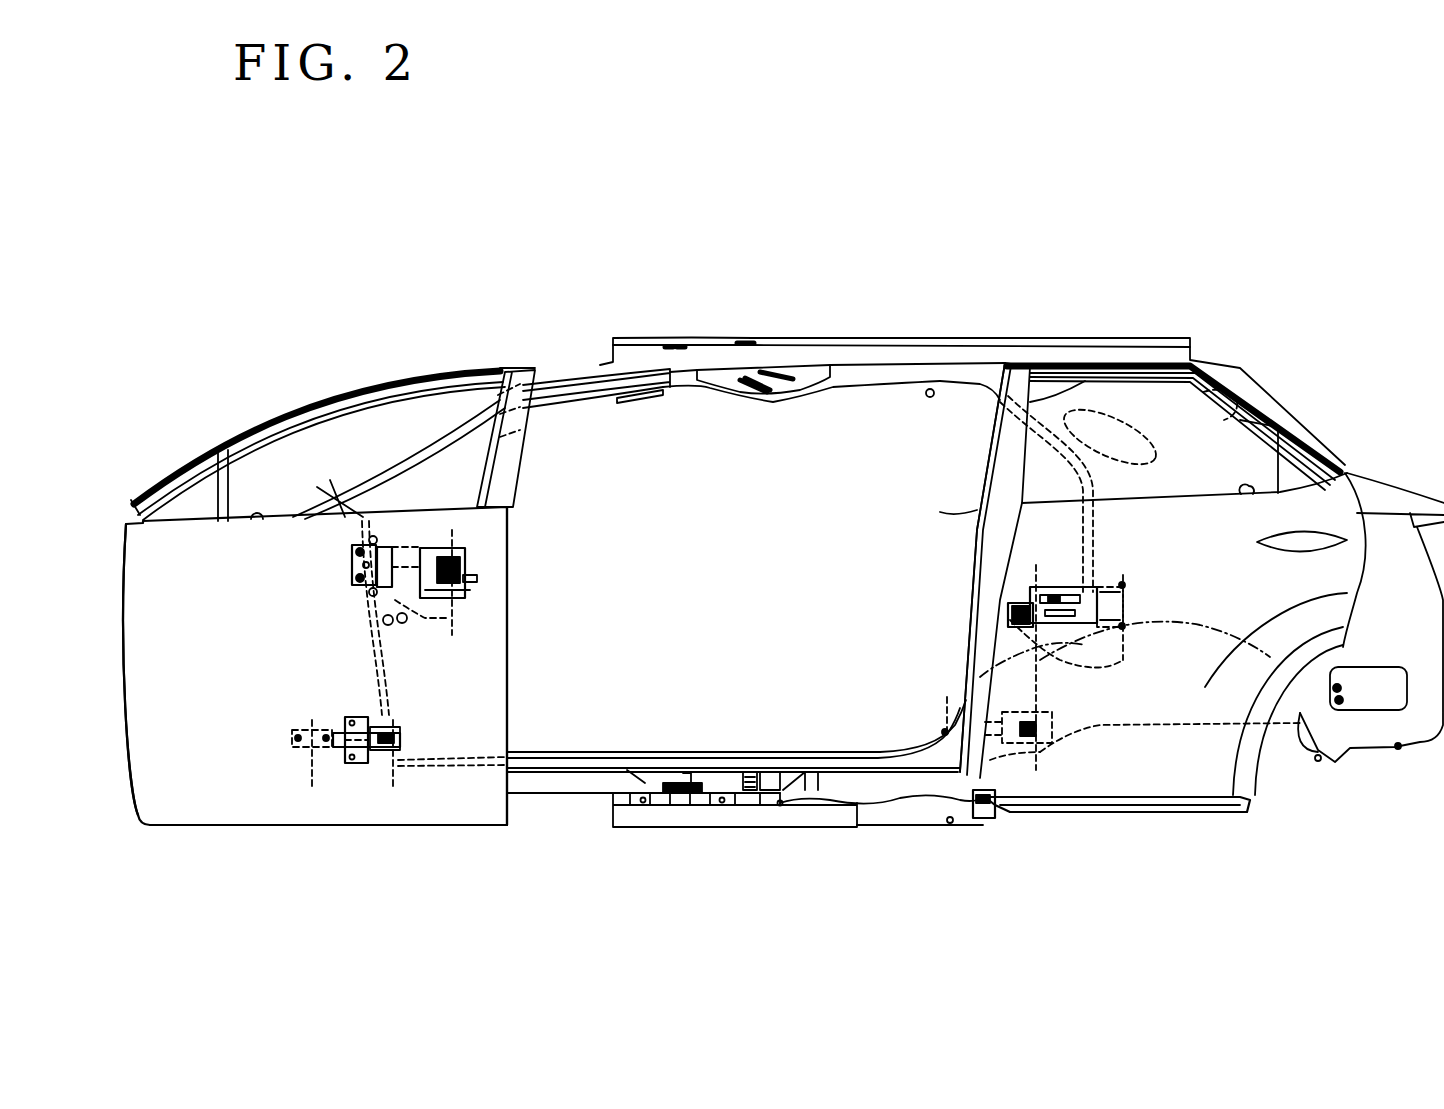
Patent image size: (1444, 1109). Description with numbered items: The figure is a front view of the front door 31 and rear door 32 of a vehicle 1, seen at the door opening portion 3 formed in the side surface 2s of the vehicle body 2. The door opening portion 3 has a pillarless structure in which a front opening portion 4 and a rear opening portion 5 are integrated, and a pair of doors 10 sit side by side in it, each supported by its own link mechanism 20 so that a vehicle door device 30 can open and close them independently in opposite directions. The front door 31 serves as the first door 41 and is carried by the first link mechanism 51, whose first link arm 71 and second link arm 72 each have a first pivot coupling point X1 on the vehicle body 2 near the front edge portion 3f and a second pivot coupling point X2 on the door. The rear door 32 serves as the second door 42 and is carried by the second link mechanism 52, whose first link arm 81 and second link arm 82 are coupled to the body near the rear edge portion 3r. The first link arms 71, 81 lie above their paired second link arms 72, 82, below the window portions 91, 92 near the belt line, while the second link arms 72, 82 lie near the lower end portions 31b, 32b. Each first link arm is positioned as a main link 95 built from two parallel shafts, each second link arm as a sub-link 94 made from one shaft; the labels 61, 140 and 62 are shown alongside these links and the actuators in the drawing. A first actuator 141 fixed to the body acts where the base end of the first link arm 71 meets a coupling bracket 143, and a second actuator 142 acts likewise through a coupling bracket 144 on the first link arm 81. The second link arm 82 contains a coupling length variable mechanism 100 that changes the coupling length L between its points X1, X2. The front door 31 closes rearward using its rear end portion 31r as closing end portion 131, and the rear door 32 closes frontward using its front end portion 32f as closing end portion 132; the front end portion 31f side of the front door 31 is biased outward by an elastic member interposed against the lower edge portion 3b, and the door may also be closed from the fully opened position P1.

The vehicle 1 is at (763, 555).
The vehicle door device 30 is at (285, 248).
The vehicle body 2 is at (1010, 342).
The side surface 2s is at (886, 358).
The door opening portion 3 is at (751, 362).
The front opening portion 4 is at (566, 412).
The rear opening portion 5 is at (945, 395).
The front edge portion 3f is at (386, 702).
The rear edge portion 3r is at (1078, 545).
The lower edge portion 3b is at (572, 785).
The coupling length variable mechanism 100 is at (952, 682).
The door 10 is at (763, 631).
The fully opened position P1 is at (763, 631).
The front door 31 is at (374, 614).
The first door 41 is at (286, 412).
The front end portion 31f is at (137, 764).
The lower end portion 31b is at (255, 827).
The rear end portion 31r is at (581, 666).
The closing end portion 131 is at (498, 602).
The window portion 91 is at (256, 522).
The rear door 32 is at (1128, 631).
The second door 42 is at (1286, 418).
The front end portion 32f is at (909, 567).
The closing end portion 132 is at (992, 520).
The lower end portion 32b is at (1158, 817).
The window portion 92 is at (1248, 497).
The link mechanism 20 is at (865, 815).
The first link mechanism 51 is at (468, 802).
The second link mechanism 52 is at (1145, 777).
The upper hinge 61 is at (793, 597).
The main link 95 is at (793, 597).
The hinge bracket 140 is at (793, 597).
The first link arm 71 is at (405, 550).
The first actuator 141 is at (448, 552).
The coupling bracket 143 is at (447, 600).
The first link arm 81 is at (1100, 587).
The second actuator 142 is at (1010, 602).
The coupling bracket 144 is at (1050, 647).
The lower hinge 62 is at (766, 770).
The sub-link 94 is at (766, 770).
The second link arm 72 is at (340, 735).
The second link arm 82 is at (1136, 796).
The coupling length L is at (1022, 815).
The first pivot coupling point X1 is at (460, 622).
The second pivot coupling point X2 is at (365, 615).